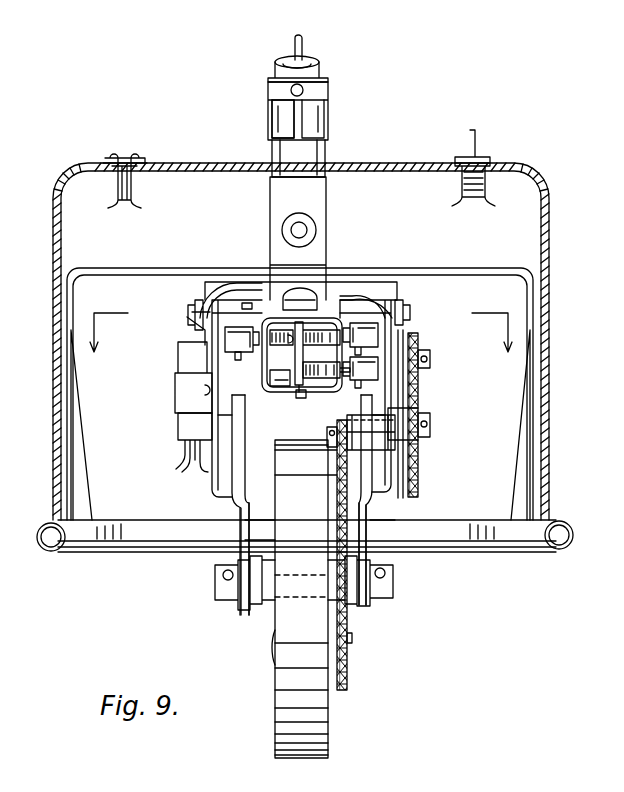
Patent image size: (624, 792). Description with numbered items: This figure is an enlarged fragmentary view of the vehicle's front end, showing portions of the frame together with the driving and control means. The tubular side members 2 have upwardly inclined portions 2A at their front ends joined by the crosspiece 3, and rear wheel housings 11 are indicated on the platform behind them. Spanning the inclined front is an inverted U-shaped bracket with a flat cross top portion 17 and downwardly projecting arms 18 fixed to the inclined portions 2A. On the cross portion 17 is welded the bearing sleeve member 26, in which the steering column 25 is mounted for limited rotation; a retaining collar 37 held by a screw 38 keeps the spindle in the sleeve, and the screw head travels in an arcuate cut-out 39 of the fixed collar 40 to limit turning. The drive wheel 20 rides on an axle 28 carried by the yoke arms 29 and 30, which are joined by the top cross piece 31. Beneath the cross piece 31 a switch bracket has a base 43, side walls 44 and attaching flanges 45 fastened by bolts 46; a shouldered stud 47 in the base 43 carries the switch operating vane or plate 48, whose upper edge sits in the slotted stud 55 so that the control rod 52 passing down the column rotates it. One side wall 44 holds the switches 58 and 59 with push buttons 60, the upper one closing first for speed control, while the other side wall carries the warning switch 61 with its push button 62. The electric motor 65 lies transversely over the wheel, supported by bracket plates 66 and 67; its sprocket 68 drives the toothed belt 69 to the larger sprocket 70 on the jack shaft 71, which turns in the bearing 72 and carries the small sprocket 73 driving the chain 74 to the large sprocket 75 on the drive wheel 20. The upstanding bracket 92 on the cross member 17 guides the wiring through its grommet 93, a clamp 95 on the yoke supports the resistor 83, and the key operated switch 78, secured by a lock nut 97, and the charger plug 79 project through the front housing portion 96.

The side members 2 is at (50, 551).
The upwardly inclined portions 2A is at (529, 550).
The crosspiece 3 is at (150, 551).
The rear wheel housings 11 is at (306, 349).
The cross top portion 17 is at (98, 269).
The downwardly projecting arms 18 is at (67, 380).
The drive wheel 20 is at (283, 714).
The steering shaft or column 25 is at (276, 63).
The bearing sleeve member 26 is at (285, 157).
The axle 28 is at (305, 610).
The yoke arm 29 is at (222, 509).
The yoke arm 30 is at (367, 508).
The top cross piece 31 is at (357, 320).
The retaining collar 37 is at (323, 78).
The screw 38 is at (303, 90).
The arcuate cut-out 39 is at (322, 100).
The fixed collar 40 is at (272, 128).
The base 43 is at (280, 396).
The side walls 44 is at (265, 382).
The attaching flanges 45 is at (238, 320).
The bolts 46 is at (247, 303).
The shouldered stud 47 is at (302, 382).
The switch operating vane or plate 48 is at (296, 340).
The control rod 52 is at (304, 44).
The axially slotted stud 55 is at (333, 304).
The switch 58 is at (363, 367).
The switch 59 is at (372, 331).
The actuating push buttons 60 is at (321, 372).
The switch 61 is at (233, 342).
The push button 62 is at (287, 340).
The electric motor 65 is at (226, 306).
The bracket plate 66 is at (187, 317).
The bracket plate 67 is at (400, 386).
The sprocket 68 is at (431, 360).
The toothed belt 69 is at (418, 472).
The larger sprocket 70 is at (431, 436).
The jack shaft 71 is at (432, 421).
The bearing 72 is at (373, 448).
The small sprocket 73 is at (326, 445).
The chain 74 is at (337, 477).
The large sprocket 75 is at (347, 617).
The key operated switch 78 is at (479, 160).
The female plug 79 is at (123, 157).
The resistor 83 is at (188, 428).
The upstanding bracket 92 is at (312, 199).
The grommet 93 is at (309, 232).
The bracket or clamp 95 is at (183, 400).
The front portion of housing 96 is at (197, 169).
The lock nut 97 is at (462, 172).